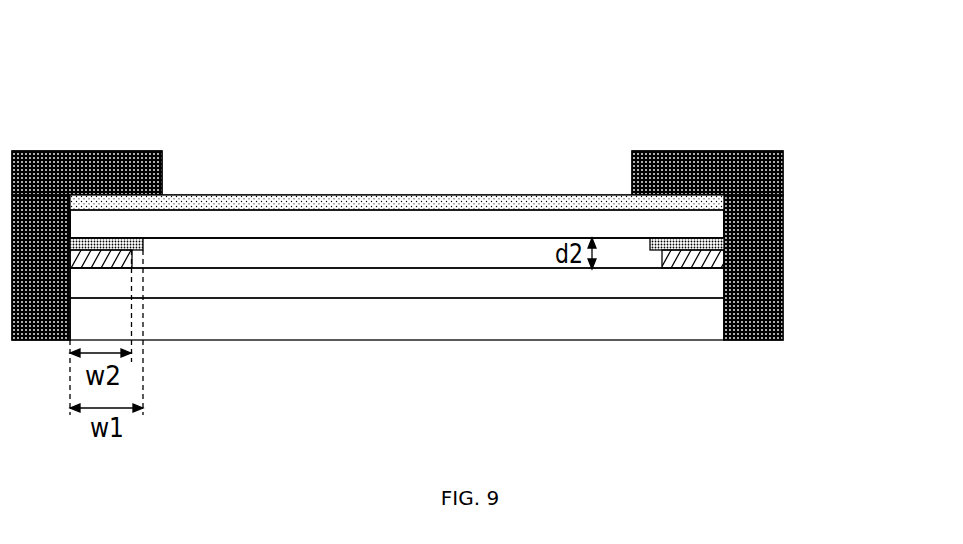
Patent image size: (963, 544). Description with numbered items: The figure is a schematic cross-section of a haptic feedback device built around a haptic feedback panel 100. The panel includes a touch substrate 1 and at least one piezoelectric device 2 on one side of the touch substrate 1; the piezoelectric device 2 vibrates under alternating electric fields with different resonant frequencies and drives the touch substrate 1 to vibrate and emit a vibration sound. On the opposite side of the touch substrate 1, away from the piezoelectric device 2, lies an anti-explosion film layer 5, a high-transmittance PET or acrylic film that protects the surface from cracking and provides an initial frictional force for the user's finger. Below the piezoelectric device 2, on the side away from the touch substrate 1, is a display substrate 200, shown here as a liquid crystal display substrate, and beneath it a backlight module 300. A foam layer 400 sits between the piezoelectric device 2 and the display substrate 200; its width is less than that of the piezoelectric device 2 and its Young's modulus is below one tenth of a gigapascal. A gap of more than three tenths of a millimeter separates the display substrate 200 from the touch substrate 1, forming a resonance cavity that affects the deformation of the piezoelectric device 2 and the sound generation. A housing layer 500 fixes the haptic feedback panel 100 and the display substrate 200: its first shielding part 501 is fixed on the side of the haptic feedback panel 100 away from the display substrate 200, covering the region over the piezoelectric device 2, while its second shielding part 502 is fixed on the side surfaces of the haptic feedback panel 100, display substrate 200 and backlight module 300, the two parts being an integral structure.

The touch substrate 1 is at (480, 208).
The piezoelectric device 2 is at (132, 242).
The anti-explosion film layer 5 is at (347, 203).
The haptic feedback panel 100 is at (503, 122).
The display substrate 200 is at (518, 283).
The backlight module 300 is at (302, 315).
The foam layer 400 is at (697, 250).
The housing layer 500 is at (466, 186).
The first shielding part 501 is at (695, 163).
The second shielding part 502 is at (753, 250).